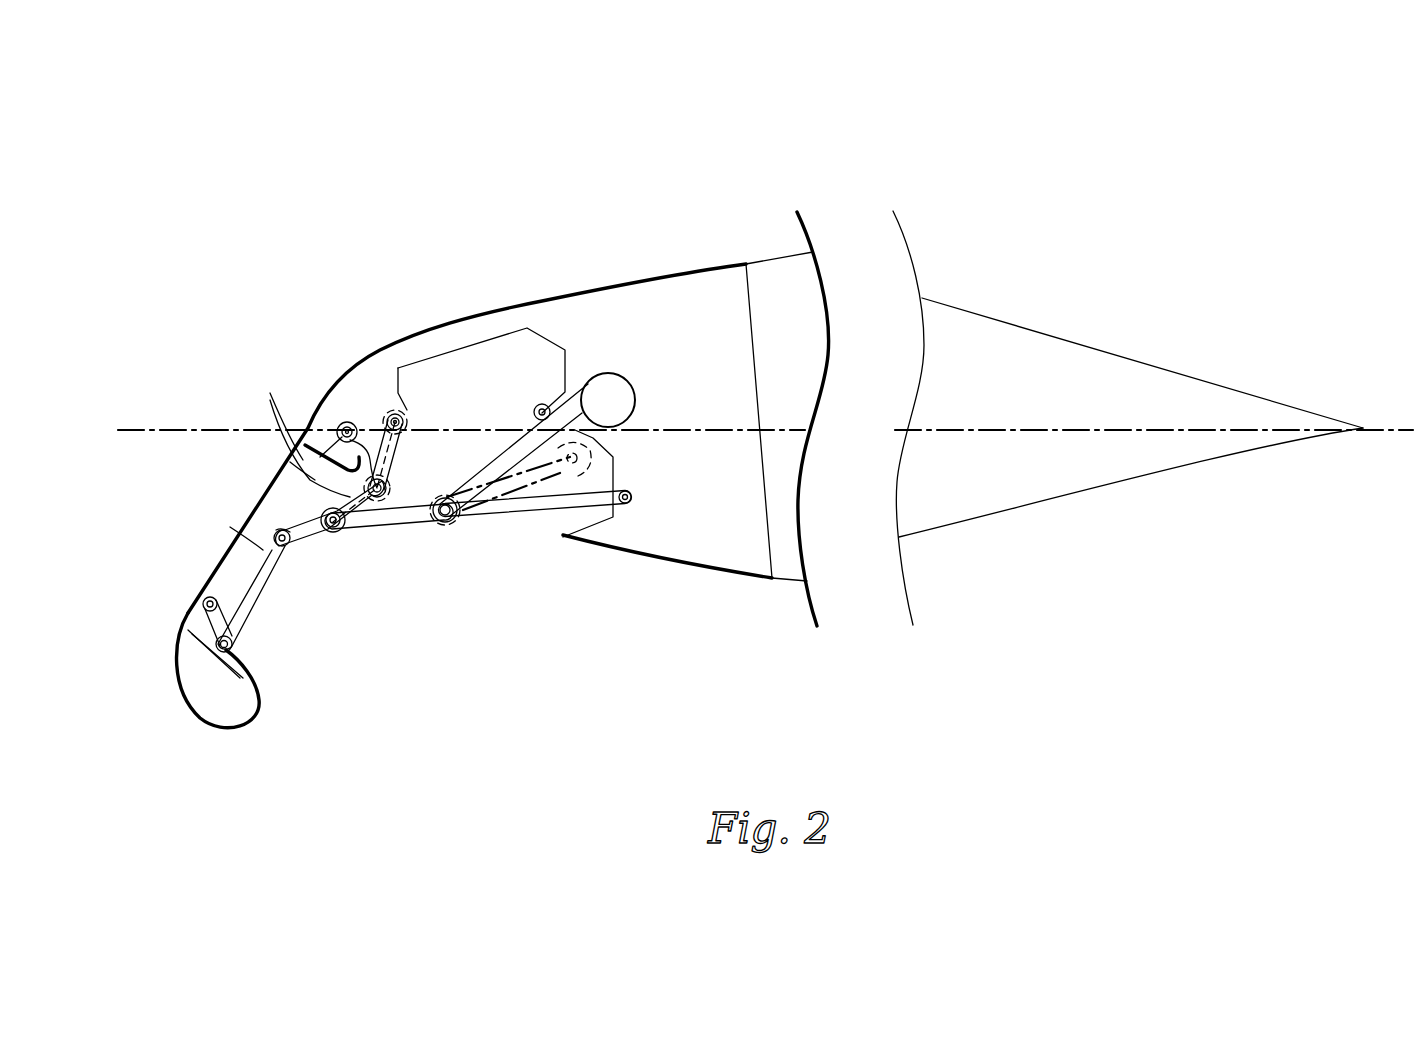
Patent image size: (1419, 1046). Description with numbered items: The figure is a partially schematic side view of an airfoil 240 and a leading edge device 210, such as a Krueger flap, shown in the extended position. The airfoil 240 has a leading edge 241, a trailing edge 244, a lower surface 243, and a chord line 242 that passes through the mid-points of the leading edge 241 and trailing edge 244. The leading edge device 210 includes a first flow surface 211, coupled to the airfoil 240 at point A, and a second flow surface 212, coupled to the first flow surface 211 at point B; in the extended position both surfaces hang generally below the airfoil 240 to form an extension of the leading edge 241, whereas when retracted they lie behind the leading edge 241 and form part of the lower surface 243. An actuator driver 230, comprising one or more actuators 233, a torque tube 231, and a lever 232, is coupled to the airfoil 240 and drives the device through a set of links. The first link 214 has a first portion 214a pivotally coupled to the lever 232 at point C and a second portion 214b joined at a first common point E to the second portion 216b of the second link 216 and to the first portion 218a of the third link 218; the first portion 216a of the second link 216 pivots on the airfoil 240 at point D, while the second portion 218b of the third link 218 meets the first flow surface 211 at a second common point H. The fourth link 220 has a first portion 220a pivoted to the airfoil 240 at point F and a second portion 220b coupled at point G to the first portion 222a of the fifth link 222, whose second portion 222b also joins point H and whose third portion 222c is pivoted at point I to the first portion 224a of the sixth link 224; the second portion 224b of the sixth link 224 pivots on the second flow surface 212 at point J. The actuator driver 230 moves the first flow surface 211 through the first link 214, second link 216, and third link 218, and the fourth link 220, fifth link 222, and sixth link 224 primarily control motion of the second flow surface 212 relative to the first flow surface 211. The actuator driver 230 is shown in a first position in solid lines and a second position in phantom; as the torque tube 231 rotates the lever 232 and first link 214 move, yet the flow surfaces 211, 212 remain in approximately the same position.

The leading edge device 210 is at (177, 340).
The first flow surface 211 is at (263, 550).
The second flow surface 212 is at (187, 697).
The first link 214 is at (537, 513).
The first portion of first link 214a is at (530, 410).
The second portion of first link 214b is at (460, 515).
The second link 216 is at (550, 513).
The first portion of second link 216a is at (625, 507).
The second portion of second link 216b is at (460, 520).
The third link 218 is at (433, 522).
The first portion of third link 218a is at (423, 560).
The second portion of third link 218b is at (345, 540).
The fourth link 220 is at (425, 440).
The first portion of fourth link 220a is at (367, 470).
The second portion of fourth link 220b is at (403, 477).
The fifth link 222 is at (302, 537).
The first portion of fifth link 222a is at (363, 457).
The second portion of fifth link 222b is at (290, 460).
The third portion of fifth link 222c is at (278, 530).
The sixth link 224 is at (247, 630).
The first portion of sixth link 224a is at (270, 550).
The second portion of sixth link 224b is at (218, 643).
The actuator driver 230 is at (600, 363).
The torque tube 231 is at (637, 400).
The lever 232 is at (547, 400).
The actuator 233 is at (620, 375).
The airfoil 240 is at (1028, 212).
The leading edge 241 is at (303, 460).
The chord line 242 is at (946, 429).
The lower surface 243 is at (727, 660).
The trailing edge 244 is at (1364, 423).